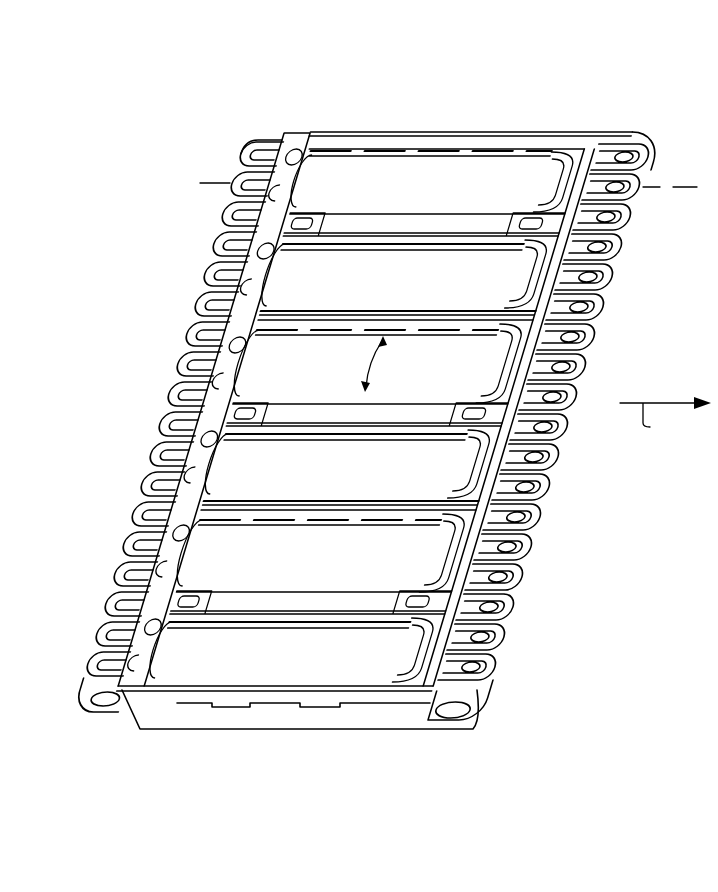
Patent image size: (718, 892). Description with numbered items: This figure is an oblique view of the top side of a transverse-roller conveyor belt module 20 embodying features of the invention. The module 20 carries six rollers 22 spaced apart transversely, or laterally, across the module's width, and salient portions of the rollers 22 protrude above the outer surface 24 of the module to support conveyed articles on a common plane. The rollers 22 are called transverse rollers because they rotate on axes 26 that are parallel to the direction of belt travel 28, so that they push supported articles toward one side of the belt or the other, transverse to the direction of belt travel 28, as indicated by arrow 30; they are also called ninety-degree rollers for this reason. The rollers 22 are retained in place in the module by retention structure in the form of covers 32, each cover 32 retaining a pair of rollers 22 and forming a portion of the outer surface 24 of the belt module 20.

The module 20 is at (471, 80).
The rollers 22 is at (327, 156).
The outer surface 24 is at (433, 612).
The axes 26 is at (650, 190).
The direction of belt travel 28 is at (665, 420).
The arrow 30 is at (378, 363).
The covers 32 is at (213, 402).